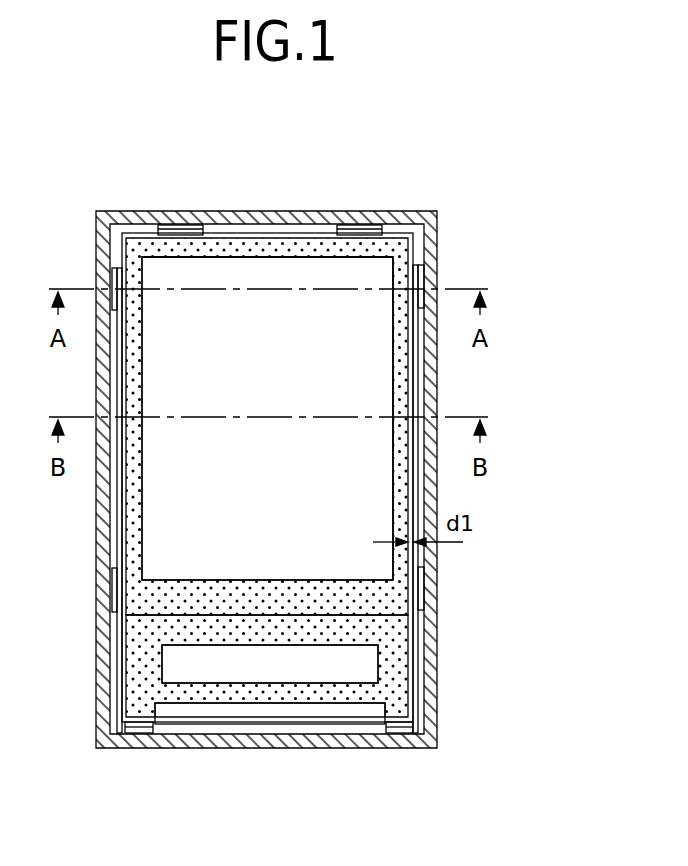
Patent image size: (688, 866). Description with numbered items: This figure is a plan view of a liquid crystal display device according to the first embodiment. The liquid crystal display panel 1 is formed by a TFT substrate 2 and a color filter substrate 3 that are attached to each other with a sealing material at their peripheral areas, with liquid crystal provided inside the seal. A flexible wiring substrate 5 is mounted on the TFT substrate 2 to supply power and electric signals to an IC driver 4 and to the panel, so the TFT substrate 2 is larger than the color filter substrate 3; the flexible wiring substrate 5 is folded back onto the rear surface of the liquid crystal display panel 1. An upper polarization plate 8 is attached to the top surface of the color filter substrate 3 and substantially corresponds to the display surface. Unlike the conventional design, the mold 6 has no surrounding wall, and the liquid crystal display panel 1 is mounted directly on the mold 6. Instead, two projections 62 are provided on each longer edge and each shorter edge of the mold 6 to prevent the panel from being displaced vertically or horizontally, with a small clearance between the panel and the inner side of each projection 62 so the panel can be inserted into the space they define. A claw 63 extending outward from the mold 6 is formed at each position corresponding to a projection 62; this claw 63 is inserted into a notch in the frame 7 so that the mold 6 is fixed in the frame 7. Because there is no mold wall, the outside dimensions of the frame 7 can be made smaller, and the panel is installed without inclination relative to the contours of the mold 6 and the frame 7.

The liquid crystal display panel 1 is at (168, 277).
The TFT substrate 2 is at (412, 630).
The color filter substrate 3 is at (400, 575).
The IC driver 4 is at (372, 674).
The flexible wiring substrate 5 is at (370, 715).
The mold 6 is at (400, 652).
The frame 7 is at (407, 212).
The upper polarization plate 8 is at (385, 275).
The projection 62 is at (347, 228).
The claw 63 is at (377, 231).